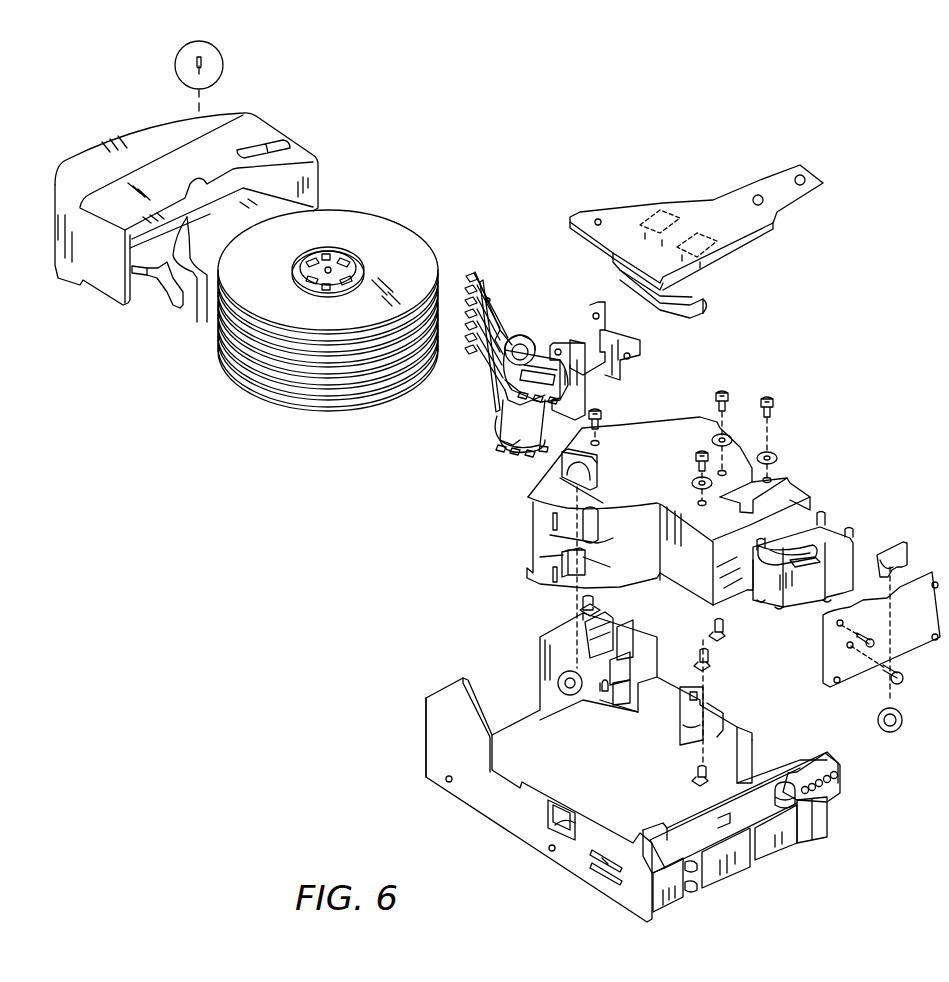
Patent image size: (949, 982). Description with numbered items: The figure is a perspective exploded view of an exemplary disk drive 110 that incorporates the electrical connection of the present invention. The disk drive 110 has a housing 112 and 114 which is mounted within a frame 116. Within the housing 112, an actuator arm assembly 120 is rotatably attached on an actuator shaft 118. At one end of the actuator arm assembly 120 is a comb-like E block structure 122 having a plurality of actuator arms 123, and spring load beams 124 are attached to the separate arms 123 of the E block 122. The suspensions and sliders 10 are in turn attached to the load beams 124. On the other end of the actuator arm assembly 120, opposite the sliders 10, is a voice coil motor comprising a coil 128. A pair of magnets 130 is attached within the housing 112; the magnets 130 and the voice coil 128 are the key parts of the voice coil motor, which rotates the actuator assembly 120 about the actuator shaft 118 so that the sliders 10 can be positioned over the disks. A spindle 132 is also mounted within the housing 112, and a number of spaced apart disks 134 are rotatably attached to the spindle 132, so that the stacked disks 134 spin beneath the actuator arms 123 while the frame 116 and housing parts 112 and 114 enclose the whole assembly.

The disk drive 110 is at (478, 178).
The housing 114 is at (102, 283).
The spindle 132 is at (330, 268).
The disks 134 is at (297, 390).
The suspensions and sliders 10 is at (466, 275).
The spring load beams 124 is at (483, 290).
The actuator arms 123 is at (503, 320).
The actuator shaft 118 is at (521, 347).
The E block structure 122 is at (478, 358).
The actuator arm assembly 120 is at (493, 360).
The coil 128 is at (530, 440).
The housing 112 is at (667, 430).
The magnets 130 is at (830, 540).
The frame 116 is at (490, 808).